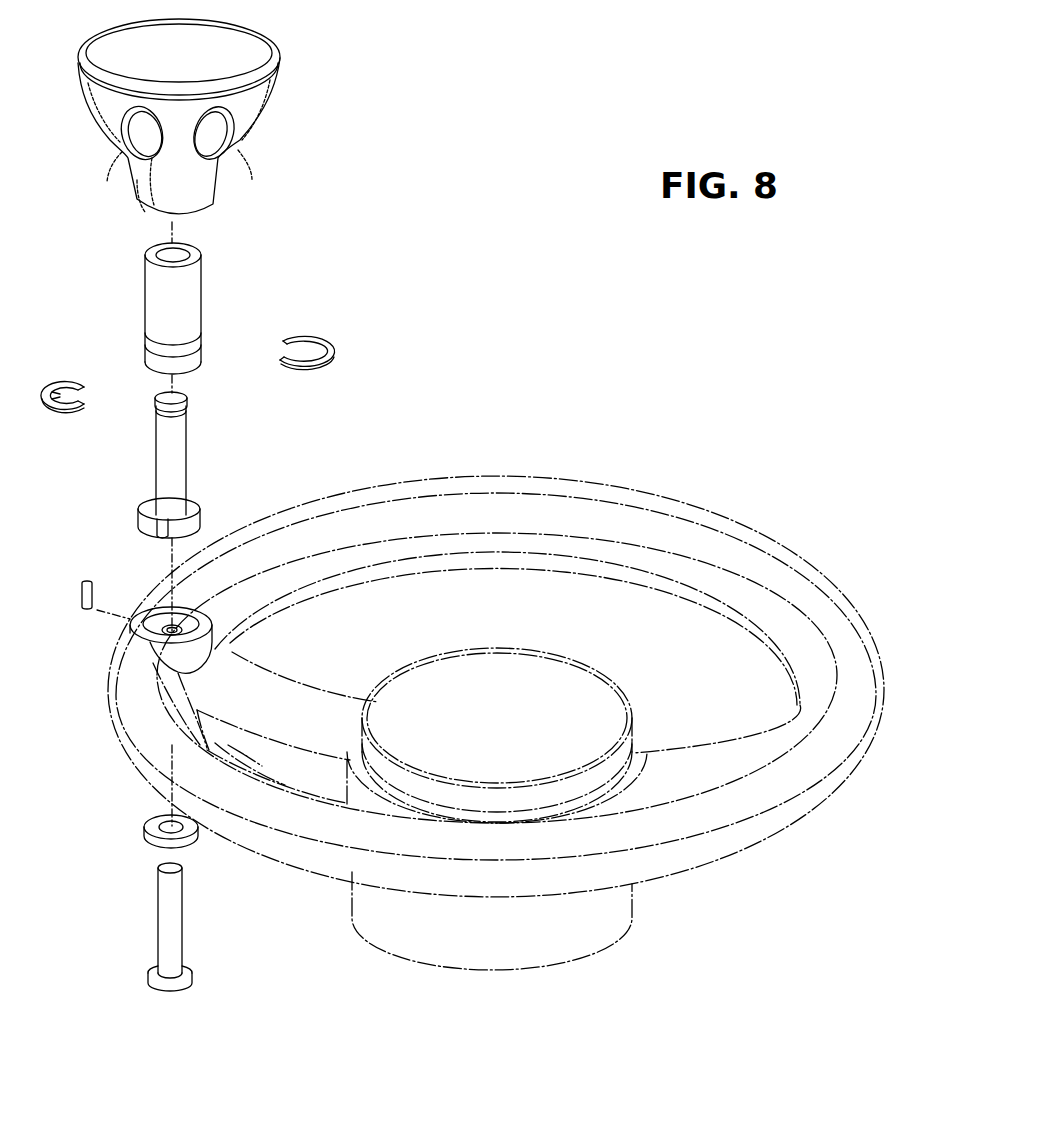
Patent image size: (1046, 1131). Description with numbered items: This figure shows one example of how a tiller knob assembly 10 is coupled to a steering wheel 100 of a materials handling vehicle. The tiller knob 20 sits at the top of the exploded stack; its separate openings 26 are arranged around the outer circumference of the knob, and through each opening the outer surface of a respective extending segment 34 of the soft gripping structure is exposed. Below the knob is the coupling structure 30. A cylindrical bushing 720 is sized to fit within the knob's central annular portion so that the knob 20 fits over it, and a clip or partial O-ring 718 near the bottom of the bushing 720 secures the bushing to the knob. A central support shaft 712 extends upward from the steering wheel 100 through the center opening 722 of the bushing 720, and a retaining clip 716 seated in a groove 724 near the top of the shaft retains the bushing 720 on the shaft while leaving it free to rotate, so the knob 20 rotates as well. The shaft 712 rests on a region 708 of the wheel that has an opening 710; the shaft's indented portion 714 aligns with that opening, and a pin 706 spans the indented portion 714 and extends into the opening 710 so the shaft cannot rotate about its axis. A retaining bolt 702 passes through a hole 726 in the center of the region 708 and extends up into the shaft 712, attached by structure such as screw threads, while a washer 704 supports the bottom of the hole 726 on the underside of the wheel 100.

The tiller knob assembly 10 is at (361, 127).
The tiller knob 20 is at (183, 116).
The openings 26 is at (160, 147).
The structure for coupling the tiller knob to the steering wheel 30 is at (283, 294).
The extending segments 34 is at (92, 118).
The steering wheel 100 is at (474, 710).
The retaining bolt 702 is at (153, 905).
The washer 704 is at (150, 825).
The pin 706 is at (80, 592).
The region 708 is at (208, 611).
The opening 710 is at (130, 621).
The central support shaft 712 is at (209, 453).
The indented portion 714 is at (148, 504).
The retaining clip 716 is at (75, 387).
The clip or partial O-ring 718 is at (330, 342).
The cylindrical bushing 720 is at (164, 297).
The center opening 722 is at (186, 250).
The groove 724 is at (187, 404).
The hole 726 is at (215, 641).